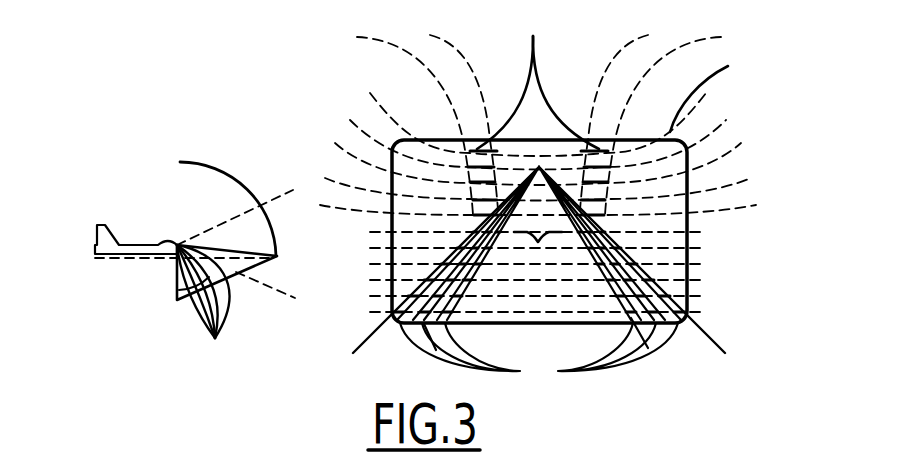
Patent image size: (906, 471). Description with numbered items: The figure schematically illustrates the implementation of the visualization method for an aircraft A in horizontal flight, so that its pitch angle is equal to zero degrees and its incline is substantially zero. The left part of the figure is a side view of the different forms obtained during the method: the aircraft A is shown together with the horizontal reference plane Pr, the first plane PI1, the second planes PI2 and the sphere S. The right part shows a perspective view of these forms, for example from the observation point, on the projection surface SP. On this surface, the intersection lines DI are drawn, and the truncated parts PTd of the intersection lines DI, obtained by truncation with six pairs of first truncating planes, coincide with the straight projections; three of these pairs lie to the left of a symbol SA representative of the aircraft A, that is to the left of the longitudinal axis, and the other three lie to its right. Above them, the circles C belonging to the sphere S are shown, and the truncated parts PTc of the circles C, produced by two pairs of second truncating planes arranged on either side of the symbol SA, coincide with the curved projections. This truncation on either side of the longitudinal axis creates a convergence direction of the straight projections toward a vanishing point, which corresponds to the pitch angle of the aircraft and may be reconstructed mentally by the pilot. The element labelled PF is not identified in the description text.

The aircraft A is at (91, 260).
The horizontal reference plane Pr is at (113, 262).
The sphere S is at (219, 160).
The first plane PI1 is at (281, 257).
The second planes PI2 is at (203, 314).
The truncated parts of the circles PTc is at (538, 78).
The focal plane / fan PF is at (538, 163).
The projection surface SP is at (711, 88).
The circles C is at (757, 82).
The intersection lines DI is at (717, 222).
The symbol representative of the aircraft SA is at (538, 245).
The truncated parts of the intersection lines PTd is at (539, 356).